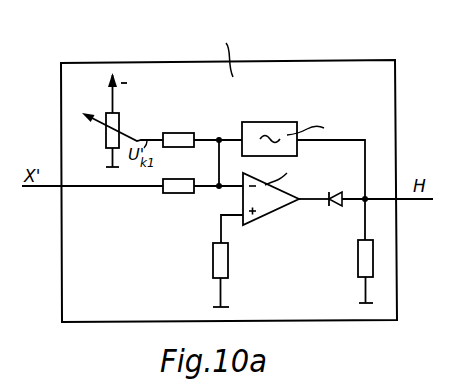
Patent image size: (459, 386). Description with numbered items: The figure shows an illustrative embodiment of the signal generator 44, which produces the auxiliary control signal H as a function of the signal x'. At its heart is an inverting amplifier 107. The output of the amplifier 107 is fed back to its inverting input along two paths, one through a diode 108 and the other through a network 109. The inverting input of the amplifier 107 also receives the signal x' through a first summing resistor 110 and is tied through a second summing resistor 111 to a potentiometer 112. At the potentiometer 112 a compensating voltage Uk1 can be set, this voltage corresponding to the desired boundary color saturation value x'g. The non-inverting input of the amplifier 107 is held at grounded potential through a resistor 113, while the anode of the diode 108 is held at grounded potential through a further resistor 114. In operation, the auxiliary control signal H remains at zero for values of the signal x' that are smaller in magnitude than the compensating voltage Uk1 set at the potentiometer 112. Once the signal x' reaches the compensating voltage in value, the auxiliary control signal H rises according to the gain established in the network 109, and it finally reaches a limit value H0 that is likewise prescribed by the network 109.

The signal generator 44 is at (70, 280).
The inverting amplifier 107 is at (266, 207).
The diode 108 is at (333, 208).
The network 109 is at (273, 128).
The first summing resistor 110 is at (177, 193).
The second summing resistor 111 is at (180, 133).
The potentiometer 112 is at (120, 125).
The resistor 113 is at (213, 267).
The resistor 114 is at (359, 263).